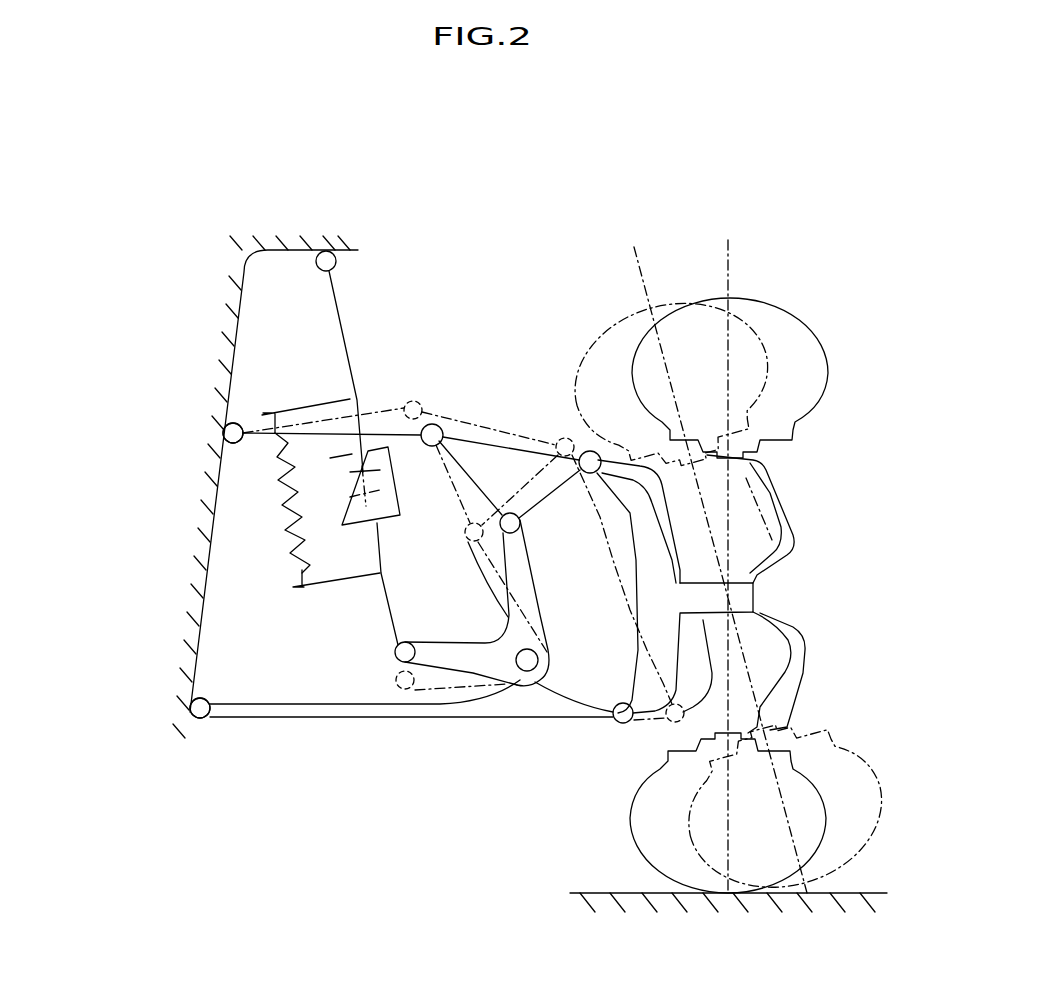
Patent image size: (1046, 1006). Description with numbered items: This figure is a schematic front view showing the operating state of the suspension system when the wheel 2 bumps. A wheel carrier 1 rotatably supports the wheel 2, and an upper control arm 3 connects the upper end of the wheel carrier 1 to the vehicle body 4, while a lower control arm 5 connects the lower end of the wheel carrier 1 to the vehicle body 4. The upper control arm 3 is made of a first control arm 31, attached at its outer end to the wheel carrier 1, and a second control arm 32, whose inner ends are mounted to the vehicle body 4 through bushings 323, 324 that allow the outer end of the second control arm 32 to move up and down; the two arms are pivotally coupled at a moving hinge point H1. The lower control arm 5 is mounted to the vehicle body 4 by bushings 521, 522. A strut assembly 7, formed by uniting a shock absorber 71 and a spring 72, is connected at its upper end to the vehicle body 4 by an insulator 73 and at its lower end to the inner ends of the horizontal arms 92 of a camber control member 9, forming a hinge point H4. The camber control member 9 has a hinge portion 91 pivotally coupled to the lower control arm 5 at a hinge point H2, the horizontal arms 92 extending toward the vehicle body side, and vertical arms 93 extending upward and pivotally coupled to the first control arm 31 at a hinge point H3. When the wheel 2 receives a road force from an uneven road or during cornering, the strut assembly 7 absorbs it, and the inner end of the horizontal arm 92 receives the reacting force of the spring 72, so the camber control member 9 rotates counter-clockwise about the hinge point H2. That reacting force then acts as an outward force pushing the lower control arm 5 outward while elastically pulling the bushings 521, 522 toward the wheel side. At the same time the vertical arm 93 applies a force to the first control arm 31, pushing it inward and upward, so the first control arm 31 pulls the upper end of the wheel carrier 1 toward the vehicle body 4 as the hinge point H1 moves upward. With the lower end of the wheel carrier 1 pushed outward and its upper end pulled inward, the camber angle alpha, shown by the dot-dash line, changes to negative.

The wheel carrier 1 is at (756, 598).
The wheel 2 is at (640, 832).
The upper control arm 3 is at (537, 289).
The first control arm 31 is at (550, 440).
The second control arm 32 is at (388, 413).
The bushing 323 is at (222, 432).
The bushing 324 is at (233, 433).
The vehicle body 4 is at (228, 323).
The lower control arm 5 is at (290, 712).
The bushing 521 is at (192, 706).
The bushing 522 is at (200, 708).
The strut assembly 7 is at (340, 395).
The shock absorber 71 is at (347, 328).
The spring 72 is at (283, 507).
The insulator 73 is at (330, 250).
The camber control member 9 is at (463, 625).
The hinge portion 91 is at (537, 690).
The horizontal arm 92 is at (443, 650).
The vertical arm 93 is at (530, 590).
The moving hinge point H1 is at (430, 424).
The hinge point H2 is at (523, 678).
The hinge point H3 is at (522, 523).
The hinge point H4 is at (395, 653).